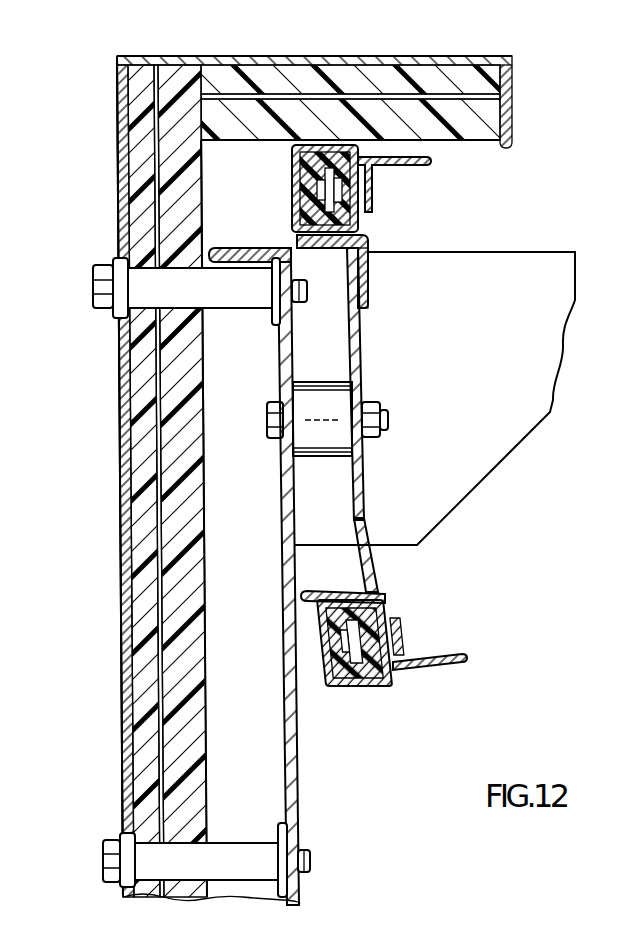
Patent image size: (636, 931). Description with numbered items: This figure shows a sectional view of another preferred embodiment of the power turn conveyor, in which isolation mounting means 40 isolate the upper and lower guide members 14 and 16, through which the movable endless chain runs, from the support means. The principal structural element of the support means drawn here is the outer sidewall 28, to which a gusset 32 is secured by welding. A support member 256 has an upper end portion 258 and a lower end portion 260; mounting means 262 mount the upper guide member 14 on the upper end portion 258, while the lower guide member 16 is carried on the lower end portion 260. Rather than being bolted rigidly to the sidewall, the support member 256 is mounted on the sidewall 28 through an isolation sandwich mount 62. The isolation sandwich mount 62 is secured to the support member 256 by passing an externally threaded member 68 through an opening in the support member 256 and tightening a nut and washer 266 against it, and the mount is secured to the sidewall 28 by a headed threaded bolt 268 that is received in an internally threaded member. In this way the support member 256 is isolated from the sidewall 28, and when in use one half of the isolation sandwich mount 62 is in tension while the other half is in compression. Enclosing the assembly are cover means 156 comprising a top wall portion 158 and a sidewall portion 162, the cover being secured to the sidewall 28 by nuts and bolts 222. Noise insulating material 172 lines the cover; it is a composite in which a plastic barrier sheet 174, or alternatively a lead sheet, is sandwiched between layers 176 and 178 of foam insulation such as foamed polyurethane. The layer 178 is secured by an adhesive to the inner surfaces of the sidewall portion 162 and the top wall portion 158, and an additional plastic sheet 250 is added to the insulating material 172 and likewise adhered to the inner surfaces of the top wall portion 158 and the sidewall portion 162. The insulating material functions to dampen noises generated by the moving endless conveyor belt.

The upper guide member 14 is at (302, 178).
The lower guide member 16 is at (348, 680).
The outer sidewall 28 is at (292, 777).
The gusset 32 is at (487, 460).
The isolation mounting means 40 is at (357, 408).
The isolation sandwich mount 62 is at (318, 456).
The externally threaded member 68 is at (388, 430).
The cover means 156 is at (524, 131).
The top wall portion 158 is at (447, 58).
The sidewall portion 162 is at (118, 146).
The noise insulating material 172 is at (212, 733).
The plastic barrier sheet 174 is at (160, 603).
The layer of foam insulation 176 is at (190, 612).
The layer of foam insulation 178 is at (150, 553).
The nuts and bolts 222 is at (100, 306).
The plastic sheet 250 is at (133, 658).
The support member 256 is at (357, 364).
The upper end portion 258 is at (356, 290).
The lower end portion 260 is at (358, 517).
The mounting means 262 is at (358, 244).
The nut and washer 266 is at (381, 410).
The headed threaded bolt 268 is at (272, 440).